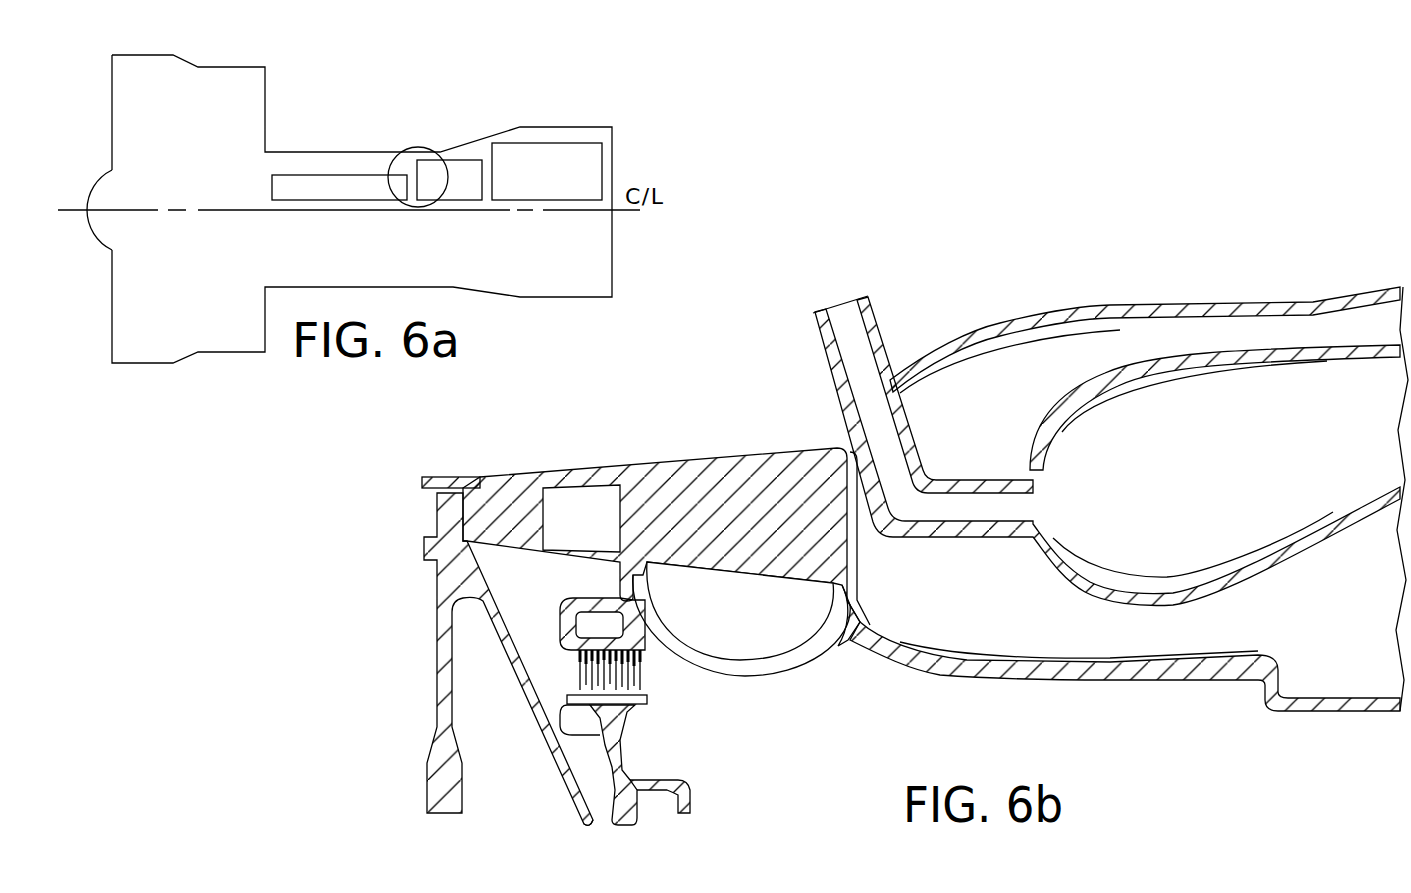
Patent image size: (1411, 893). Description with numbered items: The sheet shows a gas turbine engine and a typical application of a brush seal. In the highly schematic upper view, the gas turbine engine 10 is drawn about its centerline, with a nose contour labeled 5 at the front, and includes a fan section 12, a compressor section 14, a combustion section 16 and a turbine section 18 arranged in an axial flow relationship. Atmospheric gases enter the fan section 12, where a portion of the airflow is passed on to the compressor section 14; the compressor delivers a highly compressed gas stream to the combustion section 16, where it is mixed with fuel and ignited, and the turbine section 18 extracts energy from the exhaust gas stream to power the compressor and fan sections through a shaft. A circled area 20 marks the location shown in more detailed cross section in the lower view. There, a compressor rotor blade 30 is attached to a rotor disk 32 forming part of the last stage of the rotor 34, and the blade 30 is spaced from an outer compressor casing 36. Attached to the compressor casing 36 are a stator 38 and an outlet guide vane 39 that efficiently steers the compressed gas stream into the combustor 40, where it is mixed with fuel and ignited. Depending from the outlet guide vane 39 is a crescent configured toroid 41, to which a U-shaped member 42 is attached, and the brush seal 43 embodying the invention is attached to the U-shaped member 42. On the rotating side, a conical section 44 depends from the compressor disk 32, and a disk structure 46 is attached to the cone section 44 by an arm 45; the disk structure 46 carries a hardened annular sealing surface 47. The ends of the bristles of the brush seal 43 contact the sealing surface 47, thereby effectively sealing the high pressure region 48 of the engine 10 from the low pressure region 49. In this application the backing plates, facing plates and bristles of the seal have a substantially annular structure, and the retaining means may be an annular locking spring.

In FIG. 6a, the nose section 5 is at (70, 210).
In FIG. 6a, the gas turbine engine 10 is at (547, 89).
In FIG. 6a, the fan section 12 is at (235, 83).
In FIG. 6a, the compressor section 14 is at (333, 178).
In FIG. 6a, the combustion section 16 is at (465, 166).
In FIG. 6a, the turbine section 18 is at (565, 150).
In FIG. 6a, the area 20 is at (414, 147).
In FIG. 6b, the compressor rotor blade 30 is at (437, 513).
In FIG. 6b, the rotor disk 32 is at (453, 670).
In FIG. 6b, the rotor 34 is at (410, 732).
In FIG. 6b, the outer compressor casing 36 is at (456, 478).
In FIG. 6b, the stator 38 is at (507, 497).
In FIG. 6b, the outlet guide vane 39 is at (692, 468).
In FIG. 6b, the combustor 40 is at (1040, 380).
In FIG. 6b, the crescent configured toroid 41 is at (780, 667).
In FIG. 6b, the U-shaped member 42 is at (562, 620).
In FIG. 6b, the brush seal 43 is at (655, 682).
In FIG. 6b, the conical section 44 is at (522, 710).
In FIG. 6b, the arm 45 is at (591, 821).
In FIG. 6b, the disk structure 46 is at (633, 757).
In FIG. 6b, the hardened annular sealing surface 47 is at (637, 708).
In FIG. 6b, the high pressure region 48 is at (550, 647).
In FIG. 6b, the low pressure region 49 is at (732, 705).